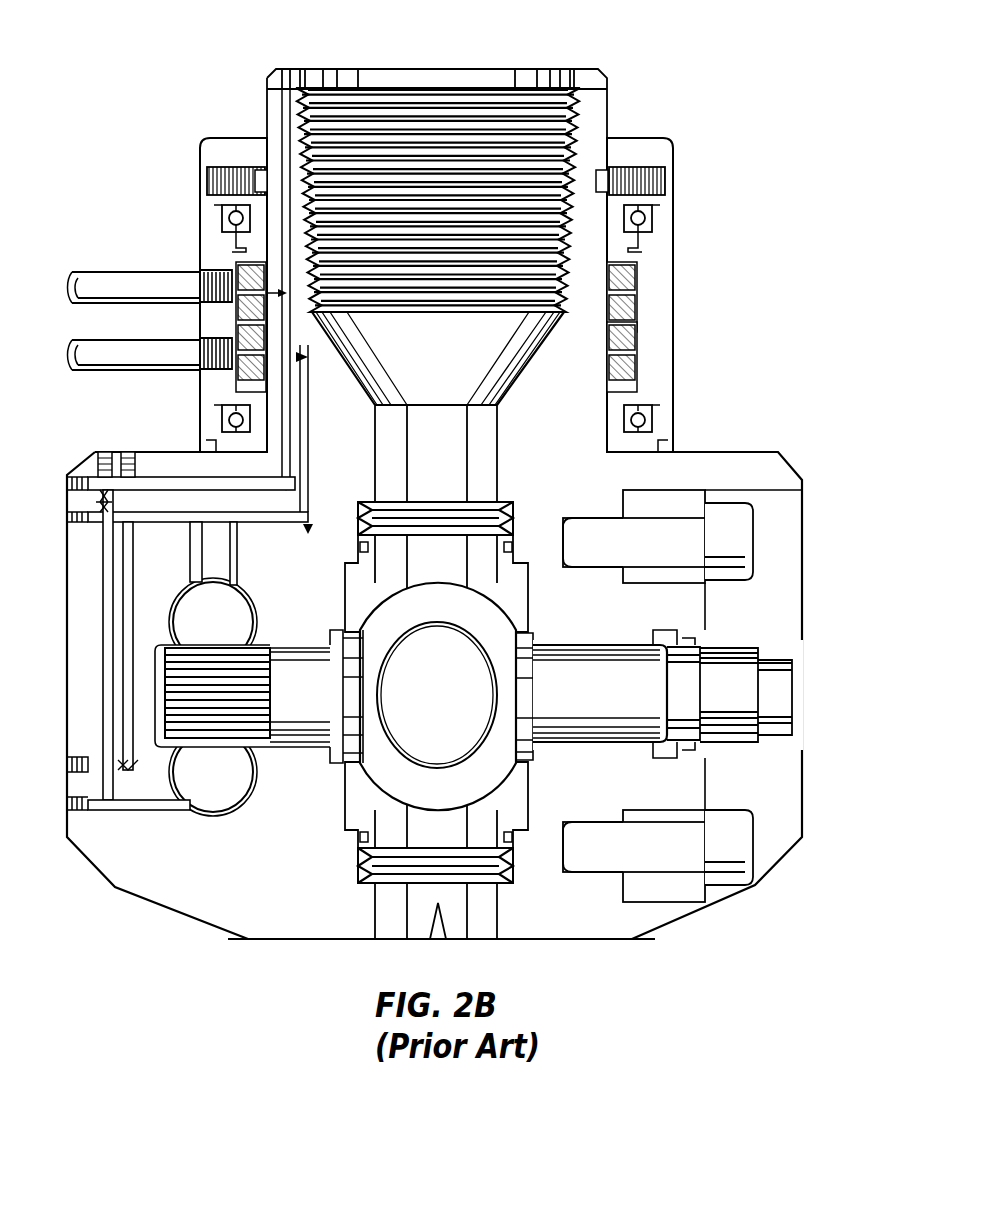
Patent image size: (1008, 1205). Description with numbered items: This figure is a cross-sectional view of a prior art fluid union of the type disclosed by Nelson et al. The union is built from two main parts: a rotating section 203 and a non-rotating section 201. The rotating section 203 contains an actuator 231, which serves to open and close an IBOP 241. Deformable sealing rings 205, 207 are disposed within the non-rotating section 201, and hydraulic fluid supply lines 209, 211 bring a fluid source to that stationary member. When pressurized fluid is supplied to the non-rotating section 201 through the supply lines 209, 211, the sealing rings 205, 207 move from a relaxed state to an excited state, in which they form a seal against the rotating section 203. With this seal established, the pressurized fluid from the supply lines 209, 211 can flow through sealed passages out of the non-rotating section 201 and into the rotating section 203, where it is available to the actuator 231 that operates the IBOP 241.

The non-rotating section 201 is at (658, 323).
The rotating section 203 is at (596, 90).
The deformable sealing ring 205 is at (632, 273).
The deformable sealing ring 207 is at (634, 366).
The hydraulic fluid supply line 209 is at (99, 278).
The hydraulic fluid supply line 211 is at (95, 347).
The actuator 231 is at (158, 619).
The IBOP 241 is at (325, 778).